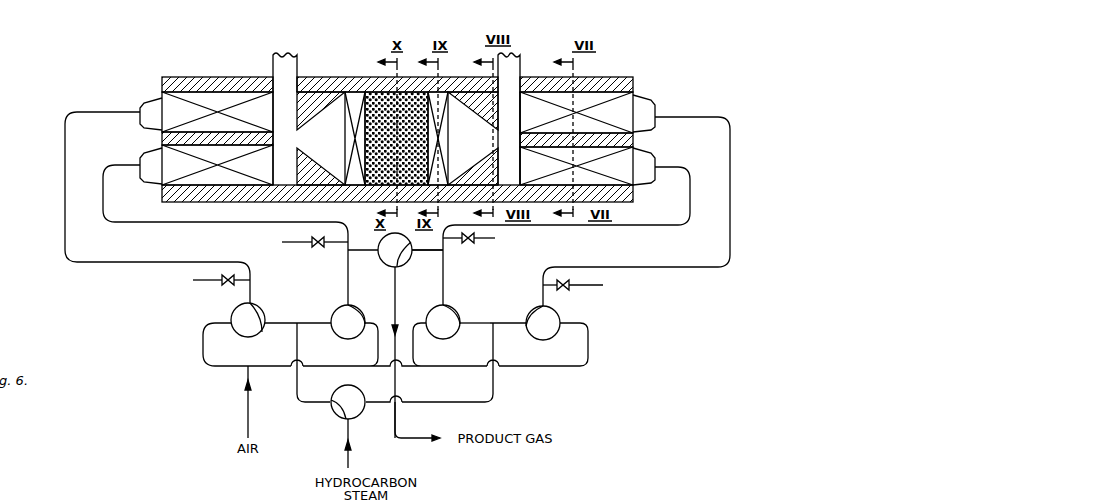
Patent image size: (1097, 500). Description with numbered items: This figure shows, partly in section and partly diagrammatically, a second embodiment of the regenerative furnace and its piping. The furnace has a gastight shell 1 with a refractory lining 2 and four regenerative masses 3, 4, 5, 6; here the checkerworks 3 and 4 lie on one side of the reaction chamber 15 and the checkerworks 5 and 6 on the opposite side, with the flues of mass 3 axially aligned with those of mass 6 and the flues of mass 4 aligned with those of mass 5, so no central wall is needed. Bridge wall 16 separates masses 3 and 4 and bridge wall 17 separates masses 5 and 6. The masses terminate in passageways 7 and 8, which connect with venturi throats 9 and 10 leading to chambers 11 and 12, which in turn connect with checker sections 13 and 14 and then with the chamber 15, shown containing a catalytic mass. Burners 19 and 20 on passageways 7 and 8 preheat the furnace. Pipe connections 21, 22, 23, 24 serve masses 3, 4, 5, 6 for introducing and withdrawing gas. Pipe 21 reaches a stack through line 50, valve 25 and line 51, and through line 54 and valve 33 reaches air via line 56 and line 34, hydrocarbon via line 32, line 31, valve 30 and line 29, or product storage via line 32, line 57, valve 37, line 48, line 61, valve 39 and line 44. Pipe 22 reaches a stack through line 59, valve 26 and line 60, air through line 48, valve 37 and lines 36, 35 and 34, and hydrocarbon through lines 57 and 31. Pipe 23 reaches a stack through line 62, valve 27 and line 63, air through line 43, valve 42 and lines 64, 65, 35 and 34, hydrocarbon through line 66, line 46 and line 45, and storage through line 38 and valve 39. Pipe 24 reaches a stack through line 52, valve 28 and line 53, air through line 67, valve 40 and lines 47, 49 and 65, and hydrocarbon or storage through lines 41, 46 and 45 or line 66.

The gastight shell 1 is at (213, 77).
The refractory lining 2 is at (197, 77).
The regenerative mass 3 is at (168, 105).
The regenerative mass 4 is at (172, 172).
The regenerative mass 5 is at (610, 170).
The regenerative mass 6 is at (605, 95).
The passageway 7 is at (282, 105).
The passageway 8 is at (515, 95).
The venturi throat 9 is at (312, 136).
The venturi throat 10 is at (494, 141).
The chamber 11 is at (340, 90).
The chamber 12 is at (460, 90).
The checker section 13 is at (370, 204).
The checker section 14 is at (412, 92).
The reaction chamber 15 is at (372, 95).
The bridge wall 16 is at (162, 138).
The bridge wall 17 is at (633, 138).
The burner 19 is at (297, 55).
The burner 20 is at (520, 55).
The pipe connection 21 is at (136, 108).
The pipe connection 22 is at (118, 163).
The pipe connection 23 is at (673, 167).
The pipe connection 24 is at (731, 132).
The valve 25 is at (200, 280).
The valve 26 is at (318, 246).
The valve 27 is at (478, 242).
The valve 28 is at (572, 280).
The line 29 is at (343, 432).
The valve 30 is at (338, 390).
The line 31 is at (297, 354).
The line 32 is at (297, 333).
The valve 33 is at (263, 310).
The line 34 is at (243, 400).
The line 35 is at (281, 372).
The line 36 is at (378, 350).
The valve 37 is at (334, 309).
The line 38 is at (425, 256).
The valve 39 is at (392, 270).
The valve 40 is at (552, 336).
The line 41 is at (505, 323).
The valve 42 is at (450, 307).
The line 43 is at (443, 278).
The line 44 is at (400, 413).
The line 45 is at (460, 401).
The line 46 is at (493, 346).
The line 47 is at (588, 343).
The line 48 is at (348, 286).
The line 49 is at (540, 370).
The line 50 is at (237, 290).
The line 51 is at (222, 284).
The line 52 is at (553, 292).
The line 53 is at (593, 288).
The line 54 is at (258, 300).
The line 56 is at (203, 337).
The line 57 is at (327, 326).
The line 59 is at (333, 247).
The line 60 is at (282, 242).
The line 61 is at (389, 250).
The line 62 is at (468, 244).
The line 63 is at (495, 240).
The line 64 is at (413, 352).
The line 65 is at (388, 369).
The line 66 is at (480, 326).
The line 67 is at (543, 287).